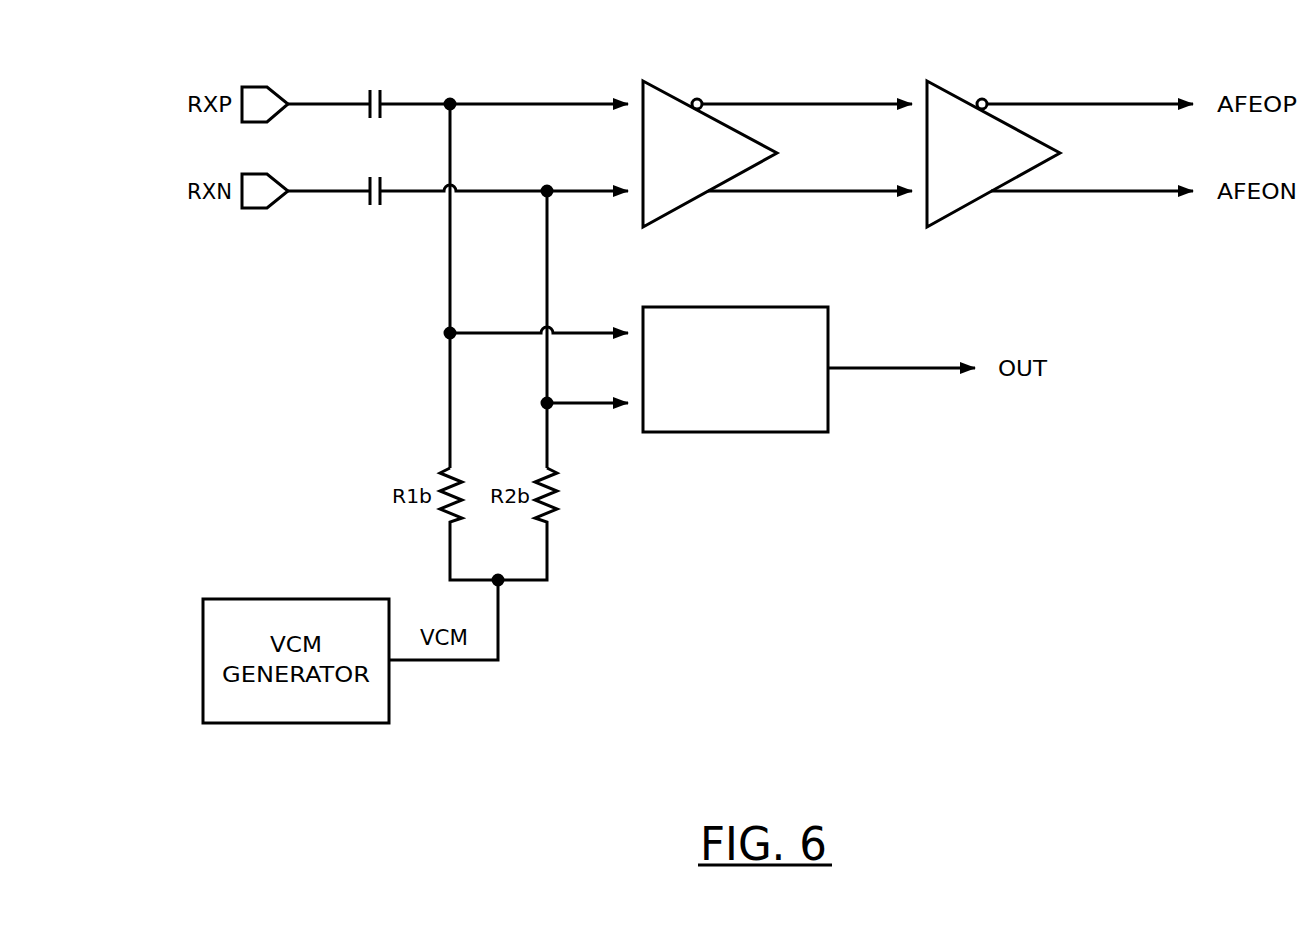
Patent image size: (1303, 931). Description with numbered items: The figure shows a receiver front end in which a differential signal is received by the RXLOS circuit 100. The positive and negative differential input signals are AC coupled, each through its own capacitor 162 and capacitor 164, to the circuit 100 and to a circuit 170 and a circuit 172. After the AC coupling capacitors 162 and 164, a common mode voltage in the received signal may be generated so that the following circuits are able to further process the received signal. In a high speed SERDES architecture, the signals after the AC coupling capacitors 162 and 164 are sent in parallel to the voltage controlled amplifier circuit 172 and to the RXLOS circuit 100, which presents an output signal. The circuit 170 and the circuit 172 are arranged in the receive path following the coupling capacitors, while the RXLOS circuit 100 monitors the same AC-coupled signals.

The circuit 100 is at (725, 305).
The capacitor 162 is at (377, 83).
The capacitor 164 is at (375, 210).
The circuit 170 is at (660, 90).
The circuit 172 is at (943, 90).